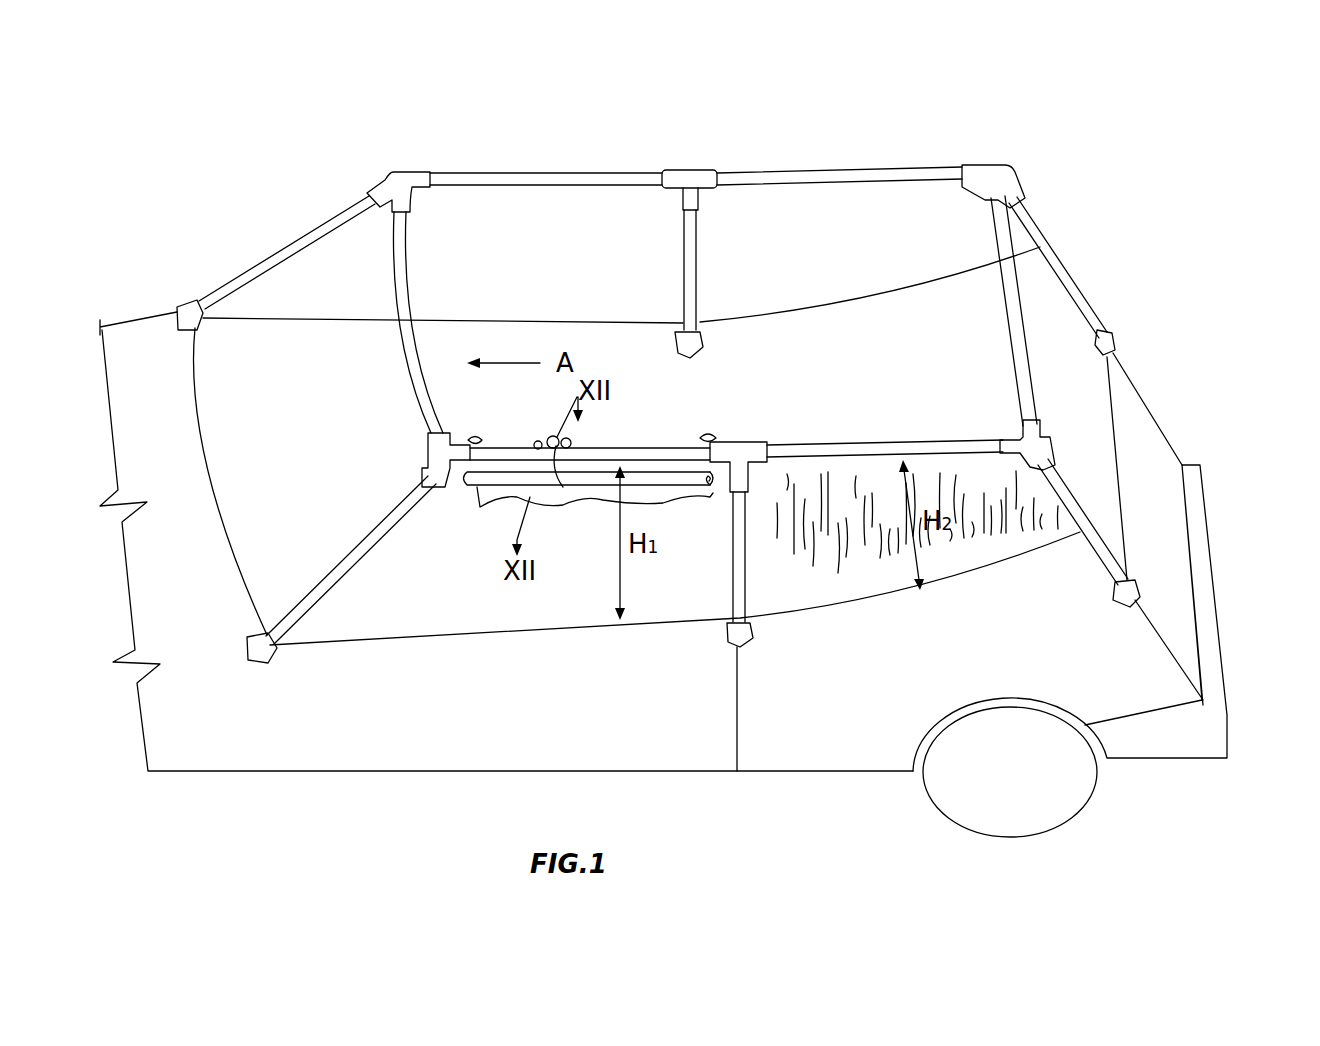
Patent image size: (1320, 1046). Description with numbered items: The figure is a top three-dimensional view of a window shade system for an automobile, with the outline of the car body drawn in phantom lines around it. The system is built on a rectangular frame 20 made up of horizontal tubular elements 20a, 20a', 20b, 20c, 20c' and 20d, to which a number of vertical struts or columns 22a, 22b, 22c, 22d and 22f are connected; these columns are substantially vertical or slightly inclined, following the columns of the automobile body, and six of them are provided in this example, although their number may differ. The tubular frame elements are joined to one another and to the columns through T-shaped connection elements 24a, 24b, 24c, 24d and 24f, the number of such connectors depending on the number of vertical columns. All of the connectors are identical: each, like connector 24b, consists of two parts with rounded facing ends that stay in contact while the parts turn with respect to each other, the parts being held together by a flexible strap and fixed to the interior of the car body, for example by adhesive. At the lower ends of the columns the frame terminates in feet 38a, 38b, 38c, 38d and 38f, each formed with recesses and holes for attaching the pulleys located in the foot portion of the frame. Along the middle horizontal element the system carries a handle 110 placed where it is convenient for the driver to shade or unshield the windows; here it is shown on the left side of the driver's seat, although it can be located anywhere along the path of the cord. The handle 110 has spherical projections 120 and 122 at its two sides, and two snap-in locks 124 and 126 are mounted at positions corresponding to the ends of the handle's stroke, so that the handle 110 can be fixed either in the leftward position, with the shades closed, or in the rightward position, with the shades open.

The rectangular frame 20 is at (745, 166).
The horizontal tubular element 20a is at (546, 149).
The horizontal tubular element 20a' is at (839, 149).
The horizontal tubular element 20b is at (1007, 232).
The horizontal tubular element 20c is at (912, 506).
The horizontal tubular element 20c' is at (590, 424).
The horizontal tubular element 20d is at (397, 250).
The vertical column 22a is at (357, 547).
The vertical column 22b is at (287, 250).
The vertical column 22c is at (692, 273).
The vertical column 22d is at (1052, 470).
The vertical column 22f is at (746, 538).
The T-shaped connection element 24a is at (412, 167).
The T-shaped connection element 24b is at (687, 170).
The T-shaped connection element 24c is at (992, 170).
The T-shaped connection element 24d is at (1020, 433).
The T-shaped connection element 24f is at (447, 462).
The foot 38a is at (253, 637).
The foot 38b is at (188, 307).
The foot 38c is at (695, 343).
The foot 38d is at (1140, 592).
The foot 38f is at (748, 640).
The handle 110 is at (550, 450).
The spherical projection 120 is at (533, 440).
The spherical projection 122 is at (568, 450).
The snap-in lock 124 is at (470, 437).
The snap-in lock 126 is at (703, 437).